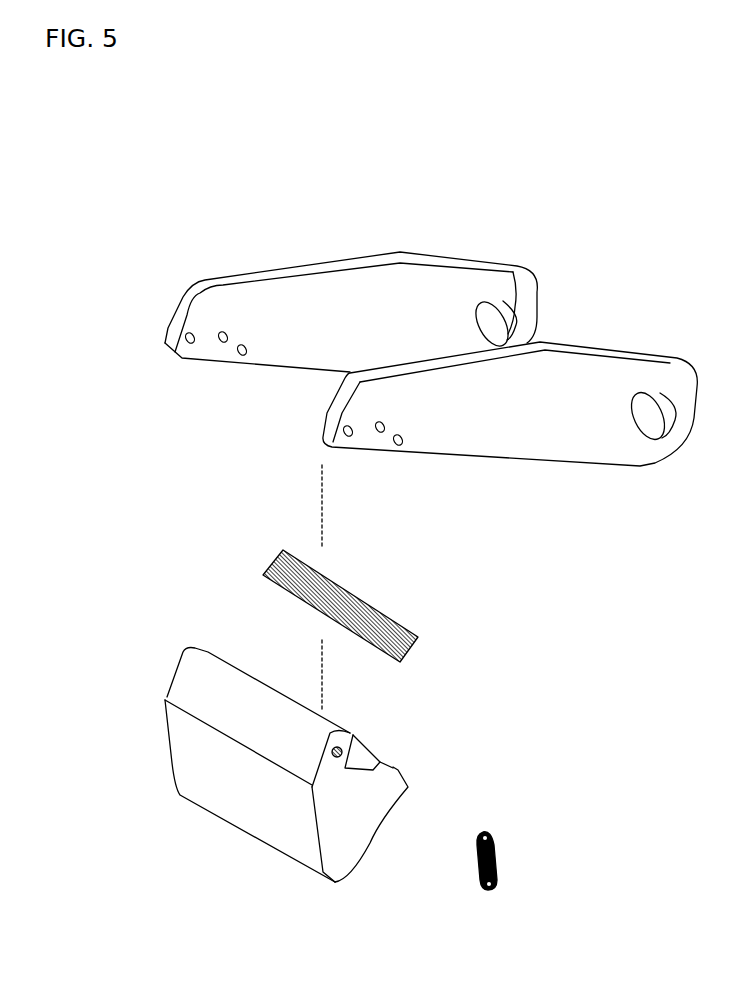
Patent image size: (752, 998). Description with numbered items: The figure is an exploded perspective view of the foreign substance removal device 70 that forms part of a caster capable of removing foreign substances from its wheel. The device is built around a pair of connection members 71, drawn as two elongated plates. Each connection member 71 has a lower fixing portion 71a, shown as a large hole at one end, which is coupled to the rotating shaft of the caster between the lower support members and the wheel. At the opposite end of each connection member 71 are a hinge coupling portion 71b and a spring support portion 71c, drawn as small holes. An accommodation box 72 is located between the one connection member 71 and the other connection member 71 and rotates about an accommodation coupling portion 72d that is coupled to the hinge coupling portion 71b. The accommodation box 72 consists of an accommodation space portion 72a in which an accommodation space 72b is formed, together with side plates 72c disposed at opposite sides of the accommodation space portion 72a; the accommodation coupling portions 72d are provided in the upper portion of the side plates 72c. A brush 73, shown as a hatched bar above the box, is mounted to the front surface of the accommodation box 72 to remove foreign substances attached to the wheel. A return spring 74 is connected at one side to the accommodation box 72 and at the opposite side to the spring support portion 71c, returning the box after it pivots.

The foreign substance removal device 70 is at (122, 190).
The connection member 71 is at (420, 385).
The lower fixing portion 71a is at (507, 318).
The hinge coupling portion 71b is at (189, 344).
The spring support portion 71c is at (226, 343).
The accommodation box 72 is at (326, 796).
The accommodation space portion 72a is at (300, 853).
The accommodation space 72b is at (372, 757).
The side plate 72c is at (350, 848).
The accommodation coupling portion 72d is at (348, 745).
The brush 73 is at (418, 640).
The return spring 74 is at (498, 862).